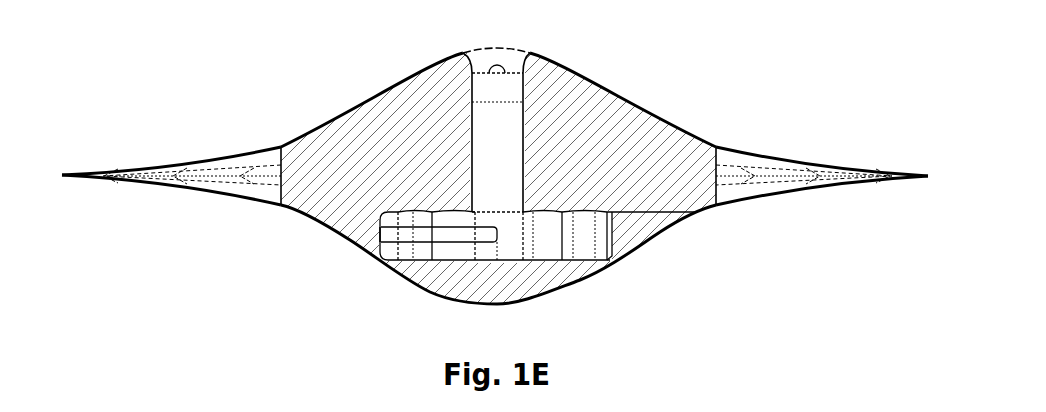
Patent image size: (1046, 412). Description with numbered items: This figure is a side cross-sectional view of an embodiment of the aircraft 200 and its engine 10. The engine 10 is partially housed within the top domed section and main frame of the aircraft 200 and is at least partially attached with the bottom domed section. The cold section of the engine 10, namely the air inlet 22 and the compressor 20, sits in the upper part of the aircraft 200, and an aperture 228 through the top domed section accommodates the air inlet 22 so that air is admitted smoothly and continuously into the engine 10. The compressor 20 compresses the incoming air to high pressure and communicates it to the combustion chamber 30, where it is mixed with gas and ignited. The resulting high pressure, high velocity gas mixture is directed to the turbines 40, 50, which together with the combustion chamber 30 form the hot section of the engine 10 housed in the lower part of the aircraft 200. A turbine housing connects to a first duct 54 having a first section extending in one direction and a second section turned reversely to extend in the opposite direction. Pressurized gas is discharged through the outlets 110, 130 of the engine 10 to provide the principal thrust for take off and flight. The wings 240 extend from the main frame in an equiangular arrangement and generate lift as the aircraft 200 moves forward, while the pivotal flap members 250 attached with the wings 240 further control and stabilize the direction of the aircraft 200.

The aircraft 200 is at (391, 73).
The aperture 228 is at (480, 47).
The air inlet 22 is at (525, 72).
The compressor 20 is at (525, 158).
The pivotal flap members 250 is at (133, 172).
The wings 240 is at (750, 195).
The engine 10 is at (450, 153).
The first duct 54 is at (410, 236).
The turbine 50 is at (407, 260).
The outlet 130 is at (493, 262).
The combustion chamber 30 is at (500, 262).
The turbine 40 is at (593, 270).
The outlet 110 is at (612, 238).